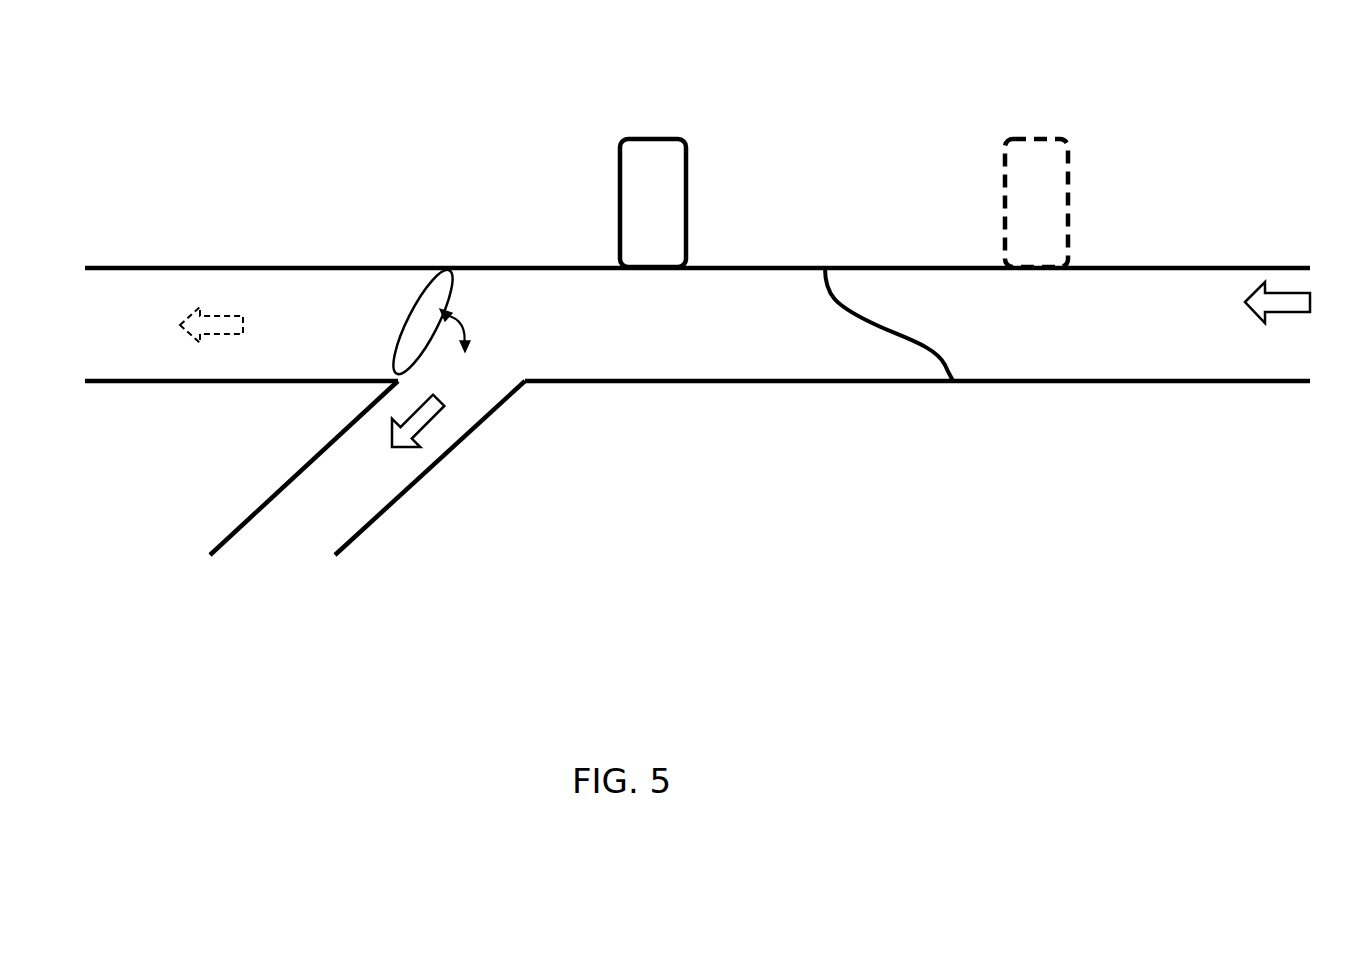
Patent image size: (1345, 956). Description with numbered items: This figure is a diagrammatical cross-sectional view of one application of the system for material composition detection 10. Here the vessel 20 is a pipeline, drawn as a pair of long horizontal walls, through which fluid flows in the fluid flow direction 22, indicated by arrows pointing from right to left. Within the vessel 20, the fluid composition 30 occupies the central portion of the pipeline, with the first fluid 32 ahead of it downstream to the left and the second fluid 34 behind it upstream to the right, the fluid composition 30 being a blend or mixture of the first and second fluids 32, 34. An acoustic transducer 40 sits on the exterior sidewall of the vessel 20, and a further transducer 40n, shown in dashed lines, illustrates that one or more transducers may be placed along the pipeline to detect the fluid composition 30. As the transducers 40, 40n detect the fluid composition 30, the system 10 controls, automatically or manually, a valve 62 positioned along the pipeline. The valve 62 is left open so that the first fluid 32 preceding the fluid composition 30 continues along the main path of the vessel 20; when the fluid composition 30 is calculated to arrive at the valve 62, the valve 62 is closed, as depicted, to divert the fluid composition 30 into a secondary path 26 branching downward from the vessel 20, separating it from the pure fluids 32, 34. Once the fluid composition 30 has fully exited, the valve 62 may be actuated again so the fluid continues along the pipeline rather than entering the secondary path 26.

The system for material composition detection 10 is at (189, 118).
The vessel 20 is at (795, 367).
The fluid flow direction 22 is at (215, 322).
The secondary path 26 is at (447, 452).
The fluid composition 30 is at (625, 341).
The first fluid 32 is at (308, 340).
The second fluid 34 is at (1088, 343).
The acoustic transducer 40 is at (688, 190).
The acoustic transducer 40n is at (1070, 190).
The valve 62 is at (442, 285).